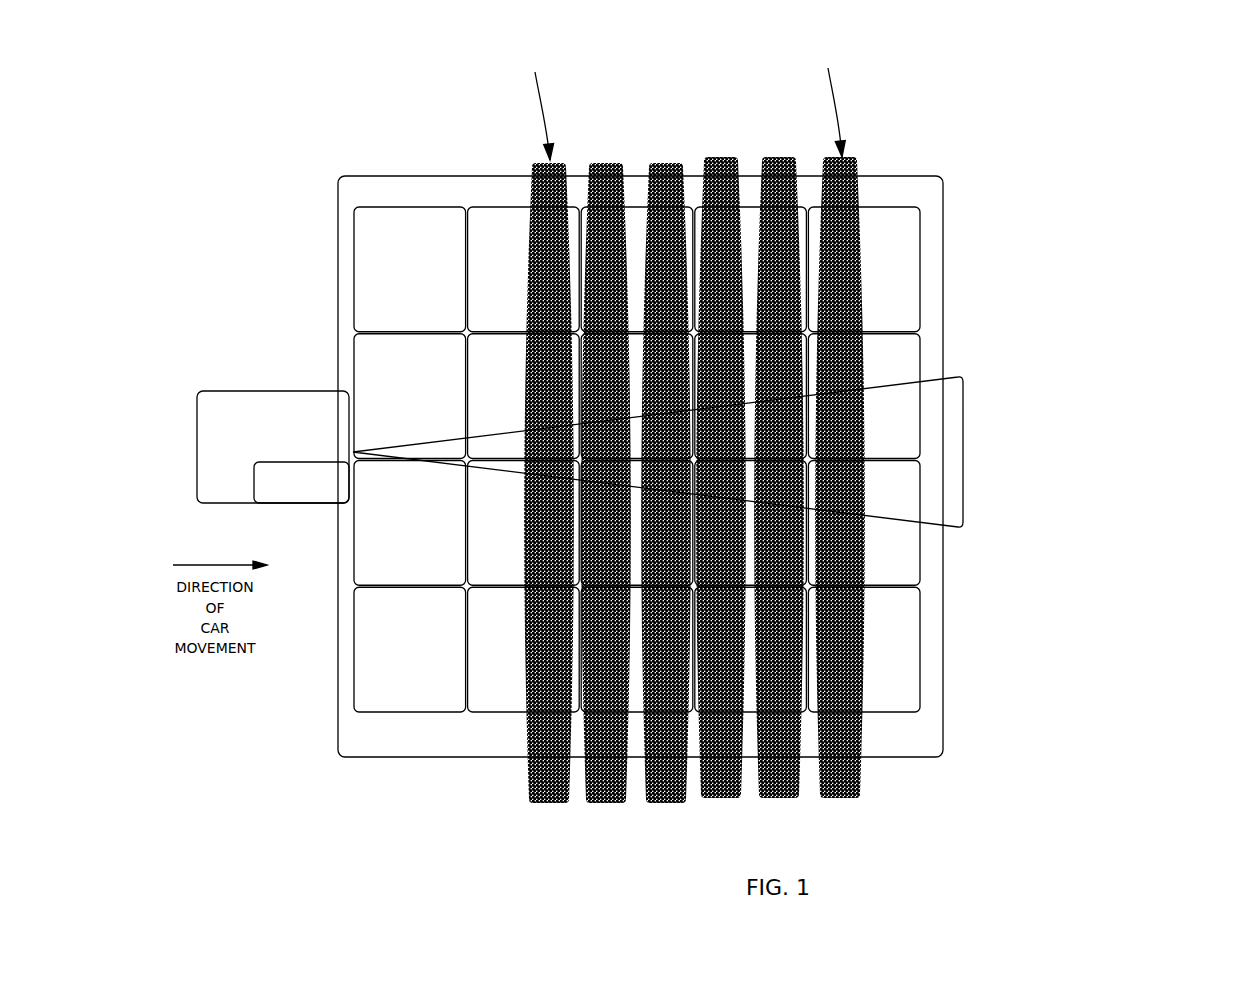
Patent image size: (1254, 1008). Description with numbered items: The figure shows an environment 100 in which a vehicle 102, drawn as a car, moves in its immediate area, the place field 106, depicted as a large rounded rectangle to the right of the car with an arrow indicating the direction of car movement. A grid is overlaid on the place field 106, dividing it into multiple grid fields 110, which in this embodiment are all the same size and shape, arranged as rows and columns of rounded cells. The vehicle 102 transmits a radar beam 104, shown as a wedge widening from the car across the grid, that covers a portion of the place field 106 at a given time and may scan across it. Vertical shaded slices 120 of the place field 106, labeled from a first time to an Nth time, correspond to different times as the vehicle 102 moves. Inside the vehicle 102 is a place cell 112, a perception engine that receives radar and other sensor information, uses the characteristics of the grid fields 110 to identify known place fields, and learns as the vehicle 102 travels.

The environment 100 is at (1117, 177).
The vehicle 102 is at (274, 391).
The radar beam 104 is at (963, 447).
The place field 106 is at (450, 758).
The grid fields 110 is at (413, 255).
The place cell 112 is at (298, 505).
The slices 120 is at (860, 167).